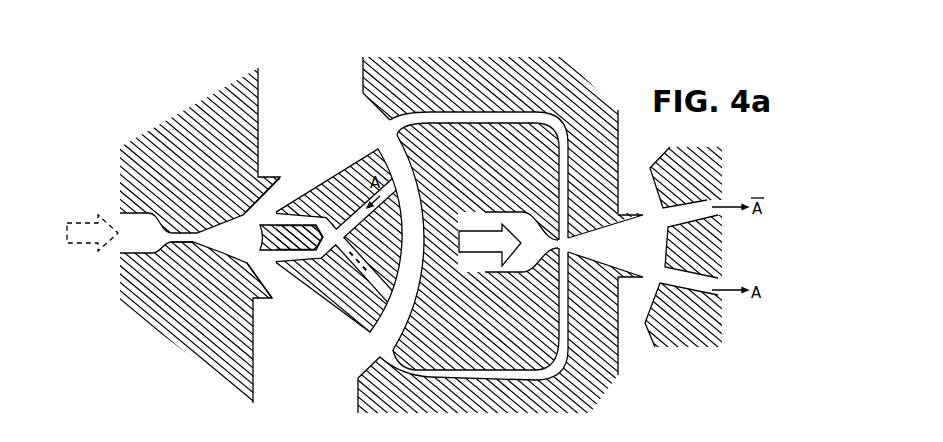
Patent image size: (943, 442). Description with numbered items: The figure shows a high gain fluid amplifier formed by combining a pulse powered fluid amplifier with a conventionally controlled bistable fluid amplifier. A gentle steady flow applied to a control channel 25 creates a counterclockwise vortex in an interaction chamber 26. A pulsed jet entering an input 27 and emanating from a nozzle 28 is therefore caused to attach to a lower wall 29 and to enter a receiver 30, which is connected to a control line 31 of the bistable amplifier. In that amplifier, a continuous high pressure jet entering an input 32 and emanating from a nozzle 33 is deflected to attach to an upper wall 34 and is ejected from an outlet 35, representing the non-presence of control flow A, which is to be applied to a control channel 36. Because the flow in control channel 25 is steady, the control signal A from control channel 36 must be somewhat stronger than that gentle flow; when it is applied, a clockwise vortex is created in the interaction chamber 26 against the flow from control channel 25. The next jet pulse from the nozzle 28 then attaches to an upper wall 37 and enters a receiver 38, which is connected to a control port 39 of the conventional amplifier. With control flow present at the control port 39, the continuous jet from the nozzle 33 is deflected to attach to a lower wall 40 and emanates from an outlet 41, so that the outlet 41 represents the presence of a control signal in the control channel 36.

The control channel 25 is at (267, 217).
The interaction chamber 26 is at (242, 246).
The input 27 is at (133, 223).
The nozzle 28 is at (193, 238).
The lower wall 29 is at (257, 275).
The receiver 30 is at (385, 356).
The control line 31 is at (545, 368).
The input 32 is at (517, 254).
The nozzle 33 is at (550, 245).
The upper wall 34 is at (606, 225).
The outlet 35 is at (722, 213).
The control channel 36 is at (268, 254).
The upper wall 37 is at (250, 193).
The receiver 38 is at (395, 131).
The control port 39 is at (530, 118).
The lower wall 40 is at (598, 262).
The outlet 41 is at (722, 295).